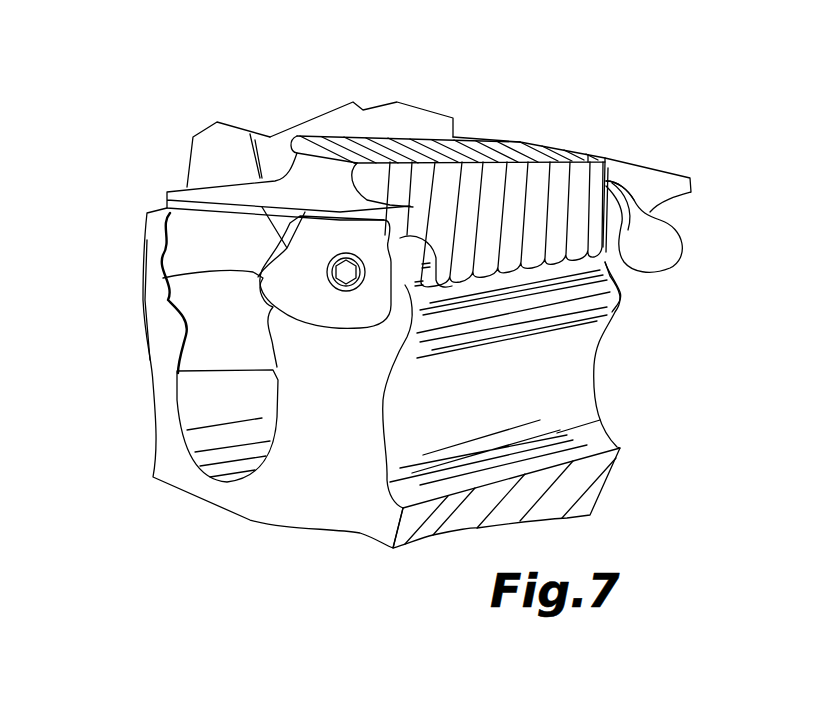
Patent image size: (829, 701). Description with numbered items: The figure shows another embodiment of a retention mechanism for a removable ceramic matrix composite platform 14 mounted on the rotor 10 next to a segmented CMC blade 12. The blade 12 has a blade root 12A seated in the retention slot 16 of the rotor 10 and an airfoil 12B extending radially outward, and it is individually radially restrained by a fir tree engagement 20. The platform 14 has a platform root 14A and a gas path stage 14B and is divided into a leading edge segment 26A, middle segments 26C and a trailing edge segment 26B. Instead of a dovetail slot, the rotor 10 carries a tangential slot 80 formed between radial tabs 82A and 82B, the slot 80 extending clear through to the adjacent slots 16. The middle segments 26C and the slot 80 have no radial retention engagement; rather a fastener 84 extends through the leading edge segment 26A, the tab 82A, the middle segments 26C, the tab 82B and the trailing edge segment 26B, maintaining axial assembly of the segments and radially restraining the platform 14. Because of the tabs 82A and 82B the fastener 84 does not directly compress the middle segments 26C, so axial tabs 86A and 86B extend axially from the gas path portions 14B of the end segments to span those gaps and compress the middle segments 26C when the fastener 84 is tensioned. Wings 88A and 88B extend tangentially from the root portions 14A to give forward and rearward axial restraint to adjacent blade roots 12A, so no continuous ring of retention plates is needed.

The rotor 10 is at (280, 497).
The blade 12 is at (223, 157).
The blade root 12A is at (210, 240).
The airfoil 12B is at (340, 118).
The platform 14 is at (668, 180).
The platform root 14A is at (480, 264).
The stage 14B is at (497, 183).
The retention slot 16 is at (217, 408).
The fir tree engagement 20 is at (170, 327).
The leading edge segment 26A is at (277, 193).
The trailing edge segment 26B is at (588, 157).
The middle segments 26C is at (480, 140).
The slot 80 is at (612, 298).
The radial tab 82A is at (420, 290).
The radial tab 82B is at (618, 198).
The fastener 84 is at (337, 293).
The axial tab 86A is at (318, 170).
The axial tab 86B is at (614, 185).
The wing 88A is at (163, 278).
The wing 88B is at (653, 240).